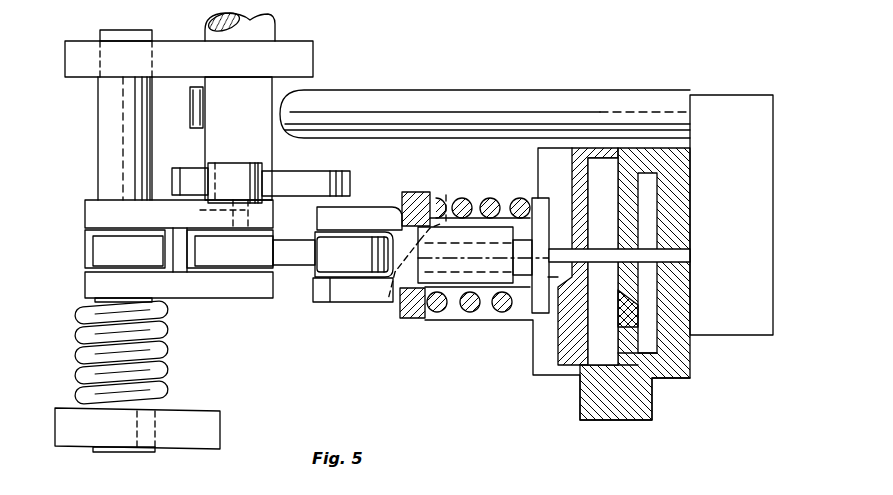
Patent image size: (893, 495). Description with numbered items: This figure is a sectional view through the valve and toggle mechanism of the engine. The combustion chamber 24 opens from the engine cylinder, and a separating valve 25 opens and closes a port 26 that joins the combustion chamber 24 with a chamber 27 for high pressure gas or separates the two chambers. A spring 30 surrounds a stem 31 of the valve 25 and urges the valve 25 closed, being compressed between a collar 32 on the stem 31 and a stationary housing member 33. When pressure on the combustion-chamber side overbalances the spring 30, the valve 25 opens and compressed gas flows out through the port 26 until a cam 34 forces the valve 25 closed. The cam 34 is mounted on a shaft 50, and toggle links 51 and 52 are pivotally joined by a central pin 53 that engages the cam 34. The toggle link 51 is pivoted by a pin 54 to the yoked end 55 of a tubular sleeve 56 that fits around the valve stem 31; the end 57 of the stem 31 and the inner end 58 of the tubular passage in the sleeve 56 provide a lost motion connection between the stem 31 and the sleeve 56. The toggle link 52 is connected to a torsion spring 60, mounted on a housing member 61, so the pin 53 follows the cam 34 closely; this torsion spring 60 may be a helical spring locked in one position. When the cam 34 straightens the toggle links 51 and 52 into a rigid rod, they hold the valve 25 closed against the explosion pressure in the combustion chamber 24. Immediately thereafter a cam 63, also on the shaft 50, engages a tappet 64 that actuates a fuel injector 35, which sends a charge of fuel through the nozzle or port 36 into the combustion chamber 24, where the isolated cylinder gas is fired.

The combustion chamber 24 is at (656, 224).
The separating valve 25 is at (622, 297).
The port 26 is at (632, 207).
The chamber 27 is at (612, 187).
The spring 30 is at (492, 178).
The stem 31 is at (604, 253).
The collar 32 is at (537, 200).
The stationary housing member 33 is at (420, 195).
The cam 34 is at (303, 178).
The fuel injector 35 is at (742, 159).
The nozzle or port 36 is at (684, 259).
The shaft 50 is at (249, 107).
The toggle link 51 is at (300, 250).
The toggle link 52 is at (180, 225).
The central pin 53 is at (260, 153).
The pin 54 is at (330, 303).
The yoked end 55 is at (380, 213).
The tubular sleeve 56 is at (421, 320).
The end of the stem 57 is at (393, 303).
The inner end of the tubular passage 58 is at (446, 194).
The torsion spring 60 is at (158, 362).
The housing member 61 is at (196, 422).
The cam 63 is at (190, 118).
The tappet 64 is at (426, 96).